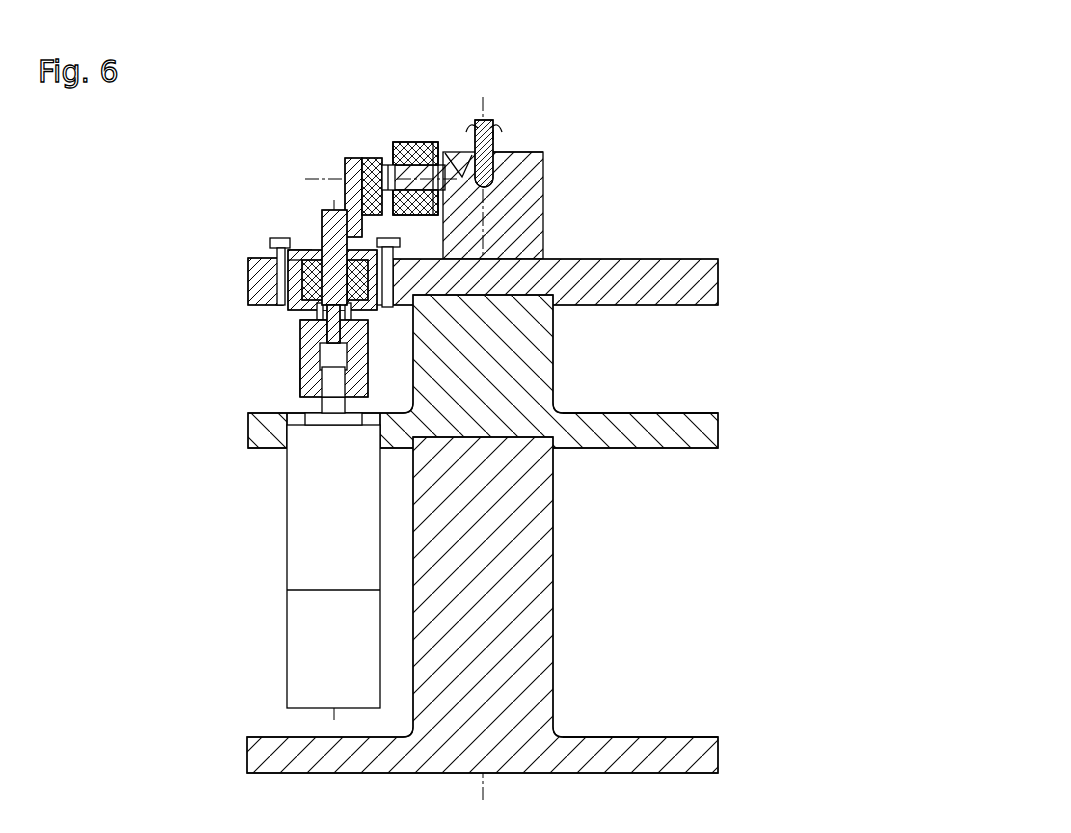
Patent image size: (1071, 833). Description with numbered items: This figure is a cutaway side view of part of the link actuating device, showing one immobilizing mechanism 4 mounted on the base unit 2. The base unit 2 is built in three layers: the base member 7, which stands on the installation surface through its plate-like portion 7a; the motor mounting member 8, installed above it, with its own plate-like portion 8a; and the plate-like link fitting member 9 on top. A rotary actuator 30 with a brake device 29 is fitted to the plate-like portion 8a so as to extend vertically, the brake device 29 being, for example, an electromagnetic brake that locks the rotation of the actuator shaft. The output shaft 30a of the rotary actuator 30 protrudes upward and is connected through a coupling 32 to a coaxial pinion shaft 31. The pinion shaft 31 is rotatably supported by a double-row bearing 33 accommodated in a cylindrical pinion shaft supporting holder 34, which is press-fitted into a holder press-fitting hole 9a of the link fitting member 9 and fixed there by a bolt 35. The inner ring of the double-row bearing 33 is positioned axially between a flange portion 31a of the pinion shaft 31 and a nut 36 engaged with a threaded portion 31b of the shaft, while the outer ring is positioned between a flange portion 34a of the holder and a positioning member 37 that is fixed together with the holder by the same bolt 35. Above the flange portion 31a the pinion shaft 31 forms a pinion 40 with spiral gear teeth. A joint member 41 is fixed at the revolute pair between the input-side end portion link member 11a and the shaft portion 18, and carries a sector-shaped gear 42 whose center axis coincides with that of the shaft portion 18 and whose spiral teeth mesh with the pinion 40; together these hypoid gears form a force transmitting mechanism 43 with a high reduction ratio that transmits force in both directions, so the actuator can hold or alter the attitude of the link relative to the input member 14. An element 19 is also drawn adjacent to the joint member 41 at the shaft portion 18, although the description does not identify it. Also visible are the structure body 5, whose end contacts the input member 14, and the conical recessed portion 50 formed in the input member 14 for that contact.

The base unit 2 is at (683, 559).
The immobilizing mechanism 4 is at (181, 570).
The structure body 5 is at (494, 136).
The base member 7 is at (555, 598).
The plate-like portion 7a is at (697, 737).
The motor mounting member 8 is at (553, 365).
The plate-like portion 8a is at (697, 413).
The link fitting member 9 is at (700, 258).
The holder press-fitting hole 9a is at (378, 307).
The end portion link member on the input side 11a is at (413, 142).
The input member 14 is at (543, 198).
The shaft portion 18 is at (485, 108).
The retaining ring 19 is at (388, 162).
The brake device 29 is at (285, 652).
The rotary actuator 30 is at (287, 515).
The output shaft 30a is at (300, 412).
The pinion shaft 31 is at (248, 262).
The flange portion 31a is at (300, 246).
The threaded portion 31b is at (300, 375).
The coupling 32 is at (300, 347).
The double-row bearing 33 is at (300, 290).
The pinion shaft supporting holder 34 is at (290, 307).
The flange portion 34a is at (316, 314).
The bolt 35 is at (270, 243).
The nut 36 is at (300, 322).
The positioning member 37 is at (297, 250).
The pinion 40 is at (321, 222).
The joint member 41 is at (348, 180).
The sector-shaped gear 42 is at (333, 208).
The force transmitting mechanism 43 is at (197, 100).
The recessed portion 50 is at (508, 163).